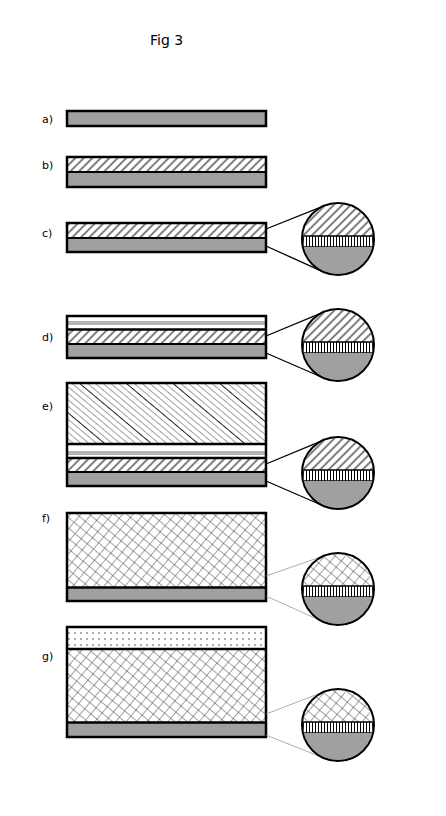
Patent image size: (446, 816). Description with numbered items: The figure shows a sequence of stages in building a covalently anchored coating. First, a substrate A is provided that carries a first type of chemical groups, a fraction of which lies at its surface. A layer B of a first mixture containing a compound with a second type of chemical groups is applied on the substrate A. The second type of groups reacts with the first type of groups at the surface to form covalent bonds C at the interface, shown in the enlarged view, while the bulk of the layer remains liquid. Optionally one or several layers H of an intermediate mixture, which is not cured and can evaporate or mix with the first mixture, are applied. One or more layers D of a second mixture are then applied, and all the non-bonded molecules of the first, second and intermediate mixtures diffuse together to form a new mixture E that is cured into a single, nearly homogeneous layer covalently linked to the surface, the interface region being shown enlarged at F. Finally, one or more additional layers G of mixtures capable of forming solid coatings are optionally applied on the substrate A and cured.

The substrate A is at (270, 112).
The layer of first mixture B is at (272, 165).
The covalent bonds C is at (381, 242).
The layer of second mixture D is at (272, 427).
The mixture E is at (274, 552).
The enlarged view of interface region with network layer F is at (380, 594).
The additional layer G is at (273, 634).
The layer of intermediate mixture H is at (244, 311).